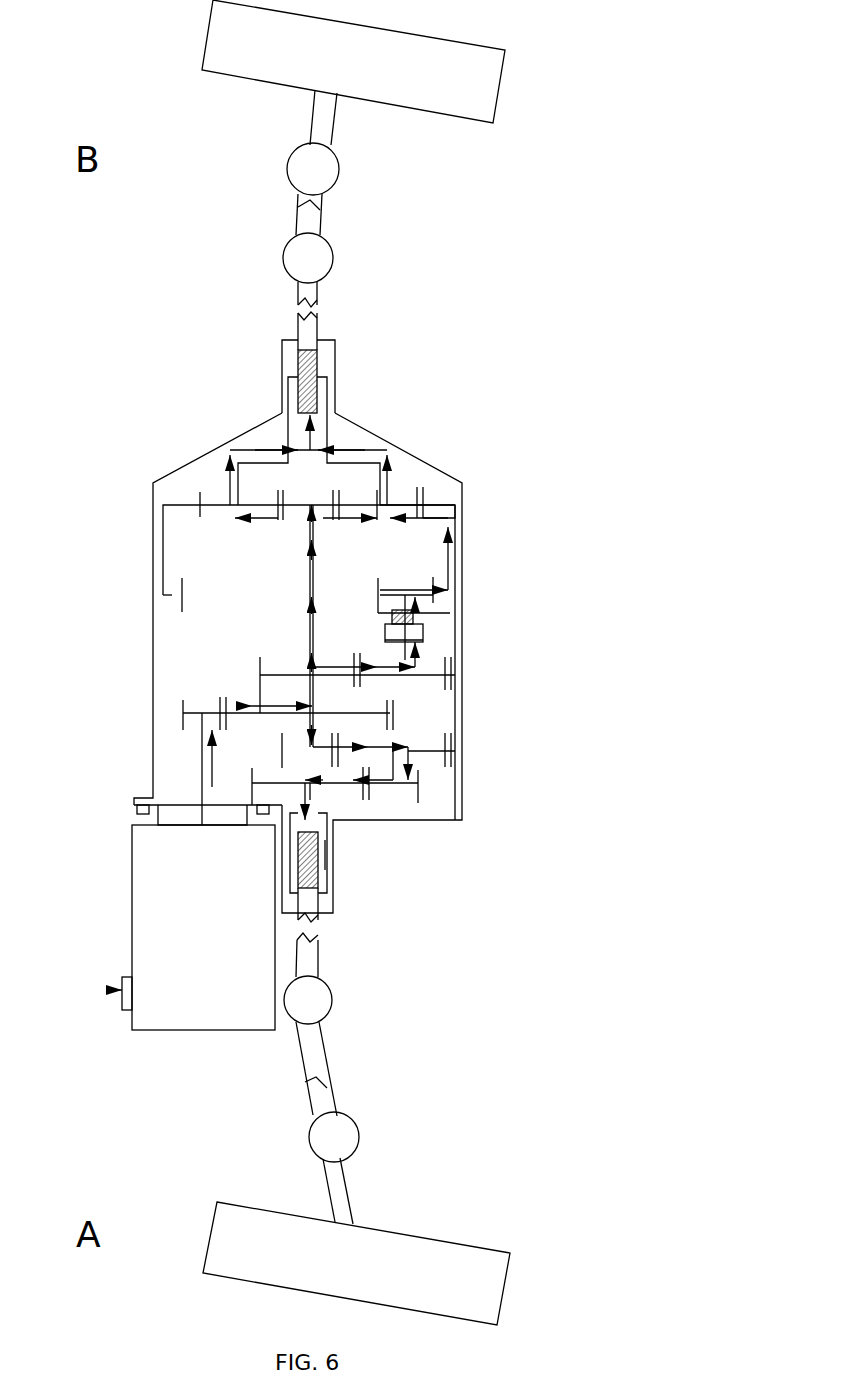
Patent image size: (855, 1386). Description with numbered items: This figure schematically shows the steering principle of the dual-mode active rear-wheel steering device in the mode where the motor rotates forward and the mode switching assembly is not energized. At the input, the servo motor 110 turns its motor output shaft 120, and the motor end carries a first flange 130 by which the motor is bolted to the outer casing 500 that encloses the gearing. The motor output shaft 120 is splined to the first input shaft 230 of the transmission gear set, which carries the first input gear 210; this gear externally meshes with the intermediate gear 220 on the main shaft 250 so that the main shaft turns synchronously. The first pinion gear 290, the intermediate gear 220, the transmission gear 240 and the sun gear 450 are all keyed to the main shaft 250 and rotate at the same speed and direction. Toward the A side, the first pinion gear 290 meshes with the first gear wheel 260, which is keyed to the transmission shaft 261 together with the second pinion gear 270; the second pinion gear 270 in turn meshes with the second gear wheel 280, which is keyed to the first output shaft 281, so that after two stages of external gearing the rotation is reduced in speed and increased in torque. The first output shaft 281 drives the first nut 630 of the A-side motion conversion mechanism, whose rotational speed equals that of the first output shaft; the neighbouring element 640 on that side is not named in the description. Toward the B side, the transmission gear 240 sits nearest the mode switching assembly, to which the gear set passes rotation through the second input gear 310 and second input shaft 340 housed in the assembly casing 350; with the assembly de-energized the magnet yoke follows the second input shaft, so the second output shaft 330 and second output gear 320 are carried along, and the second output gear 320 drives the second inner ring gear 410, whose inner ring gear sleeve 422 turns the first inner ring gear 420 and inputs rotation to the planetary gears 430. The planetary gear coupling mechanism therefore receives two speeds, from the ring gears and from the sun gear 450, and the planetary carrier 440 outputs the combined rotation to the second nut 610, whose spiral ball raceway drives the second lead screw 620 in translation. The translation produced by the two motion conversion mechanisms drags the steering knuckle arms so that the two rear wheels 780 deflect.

The servo motor 110 is at (173, 1008).
The motor output shaft 120 is at (202, 815).
The first flange 130 is at (153, 813).
The first input gear 210 is at (183, 720).
The intermediate gear 220 is at (225, 707).
The first input shaft 230 is at (202, 747).
The transmission gear 240 is at (260, 657).
The main shaft 250 is at (308, 633).
The first gear wheel 260 is at (448, 752).
The transmission shaft 261 is at (393, 768).
The second pinion gear 270 is at (418, 802).
The second gear wheel 280 is at (343, 783).
The first output shaft 281 is at (325, 853).
The first pinion gear 290 is at (282, 743).
The second input gear 310 is at (435, 675).
The second output gear 320 is at (405, 612).
The second output shaft 330 is at (433, 614).
The second input shaft 340 is at (405, 658).
The assembly casing 350 is at (380, 612).
The second inner ring gear 410 is at (433, 577).
The first inner ring gear 420 is at (423, 487).
The inner ring gear sleeve 422 is at (450, 537).
The planetary gears 430 is at (397, 505).
The planetary carrier 440 is at (350, 463).
The sun gear 450 is at (295, 505).
The outer casing 500 is at (153, 506).
The second nut 610 is at (288, 420).
The second lead screw 620 is at (307, 367).
The first nut 630 is at (307, 800).
The lower shaft 640 is at (312, 937).
The rear wheels 780 is at (302, 1277).